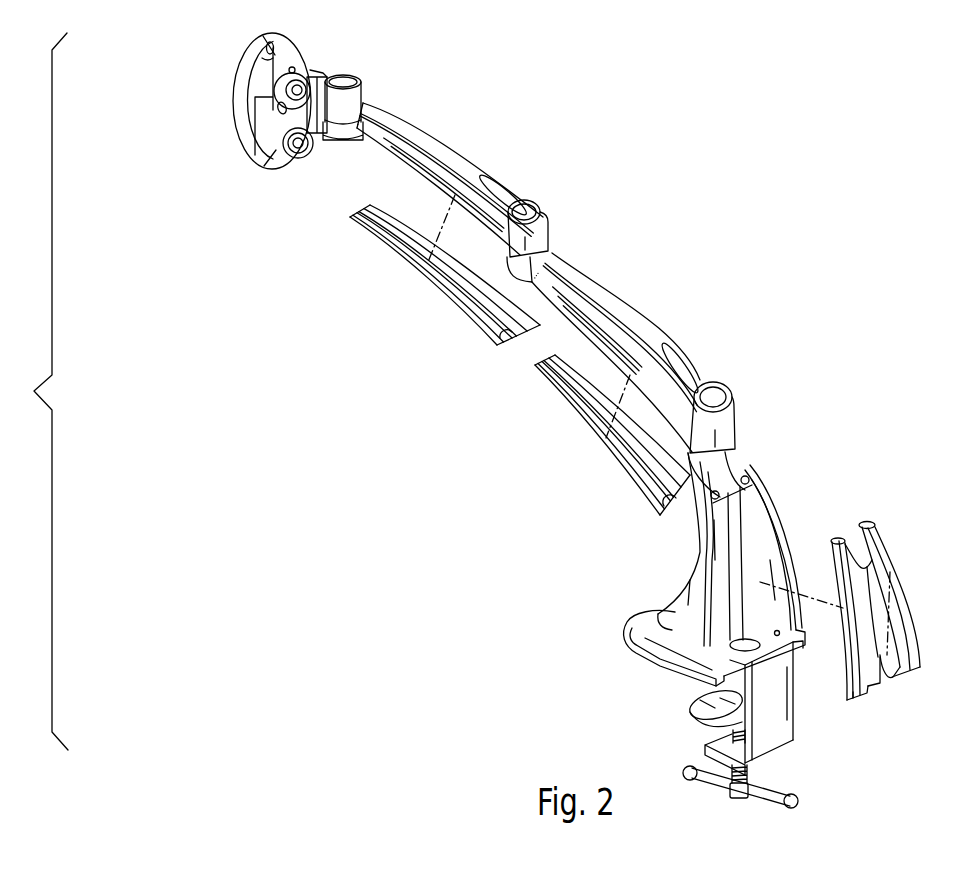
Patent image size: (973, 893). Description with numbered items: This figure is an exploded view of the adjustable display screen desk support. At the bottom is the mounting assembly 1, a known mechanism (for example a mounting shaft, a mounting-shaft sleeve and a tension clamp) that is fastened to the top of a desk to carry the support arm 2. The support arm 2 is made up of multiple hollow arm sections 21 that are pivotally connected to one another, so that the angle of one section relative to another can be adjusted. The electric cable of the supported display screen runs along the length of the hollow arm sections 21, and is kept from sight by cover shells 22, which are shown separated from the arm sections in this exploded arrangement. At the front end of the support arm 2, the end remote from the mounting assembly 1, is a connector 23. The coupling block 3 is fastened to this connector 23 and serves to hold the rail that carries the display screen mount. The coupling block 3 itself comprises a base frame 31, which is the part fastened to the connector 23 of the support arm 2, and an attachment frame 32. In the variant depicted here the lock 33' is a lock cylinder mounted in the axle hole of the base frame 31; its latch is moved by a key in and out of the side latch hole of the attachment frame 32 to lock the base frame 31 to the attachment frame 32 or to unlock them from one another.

The mounting assembly 1 is at (783, 735).
The support arm 2 is at (628, 297).
The coupling block 3 is at (250, 174).
The hollow arm sections 21 is at (680, 607).
The cover shells 22 is at (457, 292).
The connector 23 is at (307, 77).
The base frame 31 is at (266, 174).
The attachment frame 32 is at (230, 86).
The lock 33' is at (318, 156).